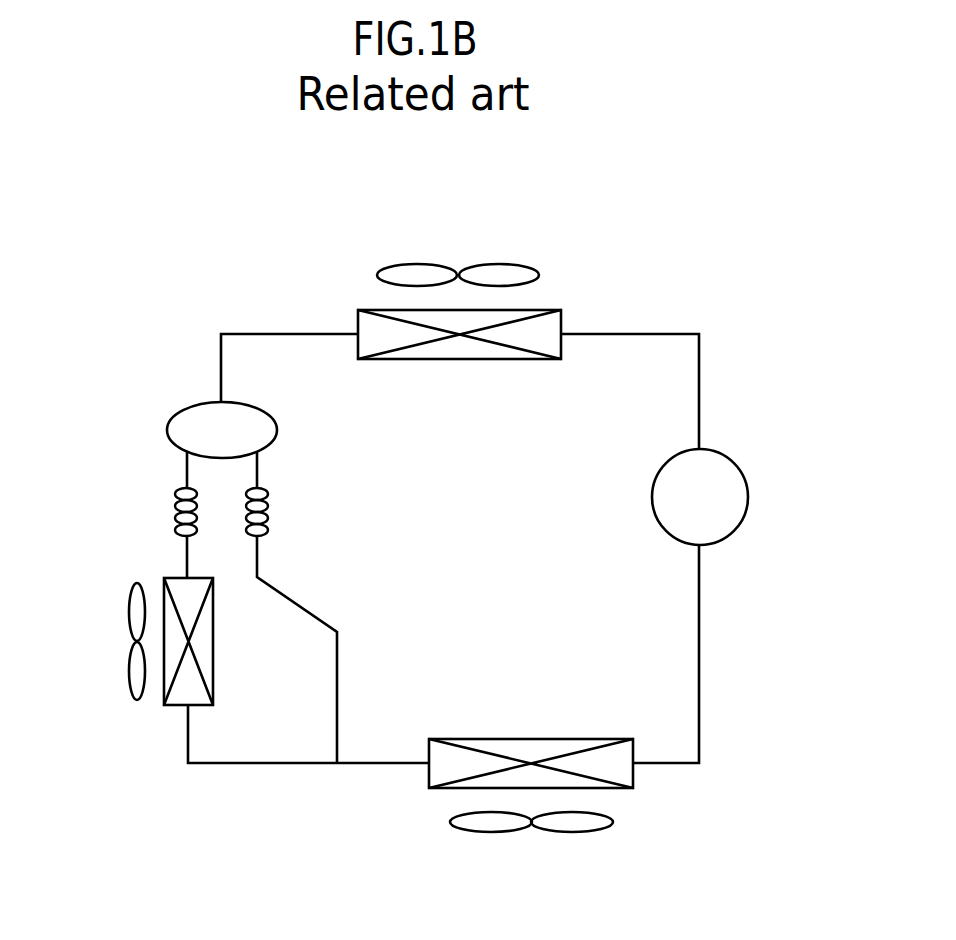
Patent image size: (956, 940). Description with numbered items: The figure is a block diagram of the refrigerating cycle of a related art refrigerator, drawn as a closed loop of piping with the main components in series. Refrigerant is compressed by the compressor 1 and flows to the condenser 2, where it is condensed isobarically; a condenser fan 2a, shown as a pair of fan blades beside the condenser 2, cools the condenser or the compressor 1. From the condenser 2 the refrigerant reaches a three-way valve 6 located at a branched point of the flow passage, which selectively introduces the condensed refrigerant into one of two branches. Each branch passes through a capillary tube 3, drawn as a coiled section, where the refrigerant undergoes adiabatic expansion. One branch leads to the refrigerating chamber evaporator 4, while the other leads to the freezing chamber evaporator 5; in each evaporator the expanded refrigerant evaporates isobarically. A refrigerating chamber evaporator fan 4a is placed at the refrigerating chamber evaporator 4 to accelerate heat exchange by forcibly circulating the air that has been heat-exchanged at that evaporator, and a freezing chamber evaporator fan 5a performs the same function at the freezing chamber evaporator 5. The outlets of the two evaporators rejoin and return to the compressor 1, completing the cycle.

The compressor 1 is at (733, 473).
The condenser 2 is at (469, 352).
The condenser fan 2a is at (487, 268).
The capillary tube 3 is at (245, 510).
The refrigerating chamber evaporator 4 is at (205, 662).
The refrigerating chamber evaporator fan 4a is at (130, 612).
The freezing chamber evaporator 5 is at (527, 745).
The freezing chamber evaporator fan 5a is at (569, 826).
The three-way valve 6 is at (182, 426).